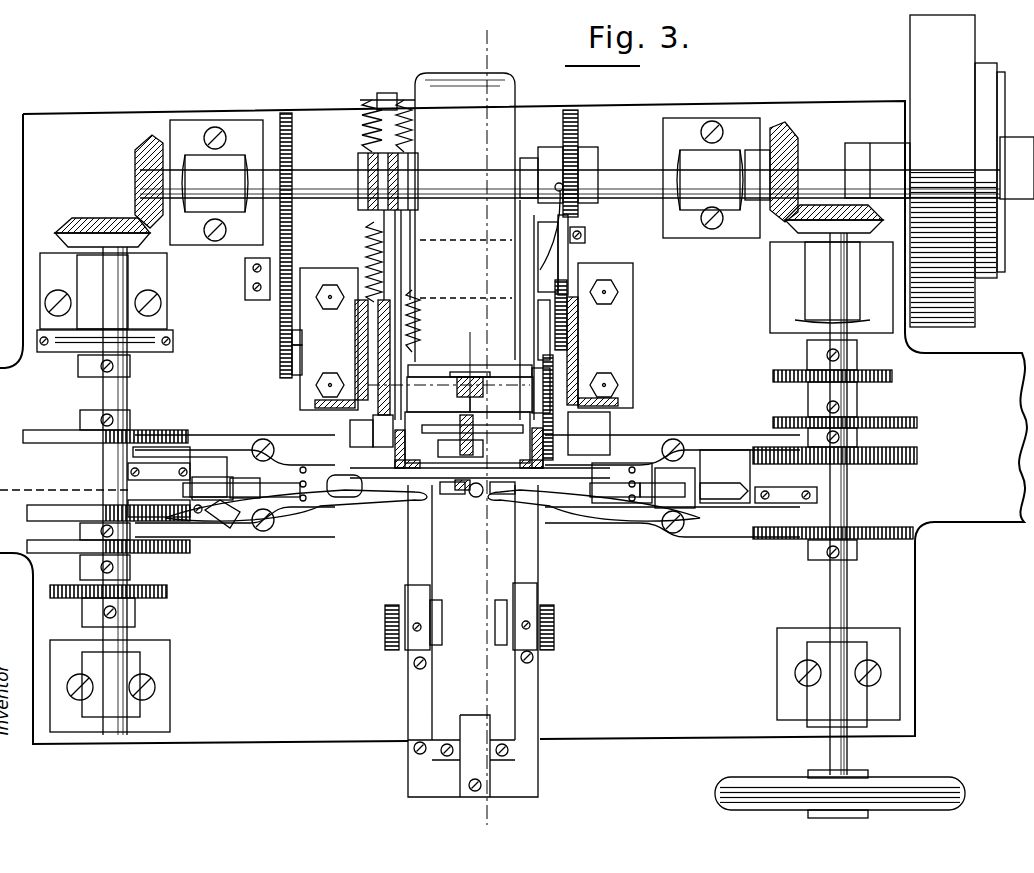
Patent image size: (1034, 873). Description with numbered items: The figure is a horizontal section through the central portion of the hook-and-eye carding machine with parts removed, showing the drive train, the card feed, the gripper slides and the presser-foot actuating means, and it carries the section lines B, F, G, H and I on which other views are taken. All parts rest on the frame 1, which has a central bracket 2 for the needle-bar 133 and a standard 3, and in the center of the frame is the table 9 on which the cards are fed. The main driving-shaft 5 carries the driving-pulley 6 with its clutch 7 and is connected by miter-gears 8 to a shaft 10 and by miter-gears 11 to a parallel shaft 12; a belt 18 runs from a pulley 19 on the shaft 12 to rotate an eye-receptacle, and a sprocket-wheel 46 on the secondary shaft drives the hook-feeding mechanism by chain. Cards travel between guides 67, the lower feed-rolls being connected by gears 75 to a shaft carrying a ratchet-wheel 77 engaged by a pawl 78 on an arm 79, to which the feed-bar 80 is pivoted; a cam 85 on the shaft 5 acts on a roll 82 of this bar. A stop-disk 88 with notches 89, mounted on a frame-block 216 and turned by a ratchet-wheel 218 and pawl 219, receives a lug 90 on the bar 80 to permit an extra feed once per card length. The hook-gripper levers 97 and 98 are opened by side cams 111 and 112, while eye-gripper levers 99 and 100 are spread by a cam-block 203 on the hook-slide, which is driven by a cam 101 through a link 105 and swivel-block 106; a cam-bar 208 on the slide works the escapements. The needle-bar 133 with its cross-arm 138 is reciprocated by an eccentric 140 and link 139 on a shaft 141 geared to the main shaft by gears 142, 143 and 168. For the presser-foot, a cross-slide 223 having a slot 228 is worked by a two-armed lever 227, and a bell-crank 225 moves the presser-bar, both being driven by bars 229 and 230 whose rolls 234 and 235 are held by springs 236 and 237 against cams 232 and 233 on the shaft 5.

The frame 1 is at (513, 422).
The central bracket 2 is at (560, 455).
The standard 3 is at (640, 326).
The main driving-shaft 5 is at (622, 166).
The driving-pulley 6 is at (910, 171).
The clutch 7 is at (985, 70).
The miter-gears 8 is at (835, 210).
The table 9 is at (540, 690).
The shaft 10 is at (815, 325).
The miter-gears 11 is at (135, 188).
The shaft 12 is at (125, 398).
The belt 18 is at (172, 336).
The pulley 19 is at (160, 345).
The sprocket-wheel 46 is at (168, 590).
The guides 67 is at (420, 525).
The gears 75 is at (545, 375).
The ratchet-wheel 77 is at (575, 398).
The pawl 78 is at (532, 375).
The arm or lever 79 is at (600, 335).
The bar 80 is at (560, 265).
The roll 82 is at (586, 232).
The cam 85 is at (580, 142).
The stop-disk 88 is at (580, 286).
The notches 89 is at (565, 256).
The lug 90 is at (545, 308).
The hook-gripper lever 97 is at (308, 530).
The hook-gripper lever 98 is at (250, 440).
The eye-gripper lever 99 is at (366, 505).
The eye-gripper lever 100 is at (320, 474).
The cam 101 is at (60, 512).
The link 105 is at (193, 465).
The swivel-block 106 is at (214, 522).
The side cam 111 is at (145, 545).
The side cam 112 is at (175, 430).
The needle-bar 133 is at (476, 494).
The cross-arm 138 is at (395, 540).
The link 139 is at (335, 298).
The eccentric 140 is at (322, 396).
The shaft 141 is at (290, 360).
The gear 142 is at (290, 340).
The gear 143 is at (278, 300).
The gear 168 is at (292, 215).
The cam-block 203 is at (265, 520).
The cam-bar 208 is at (690, 520).
The frame-block 216 is at (520, 285).
The ratchet-wheel 218 is at (530, 300).
The pawl 219 is at (515, 216).
The cross-slide 223 is at (478, 368).
The bell-crank 225 is at (458, 430).
The two-armed lever 227 is at (482, 392).
The slot 228 is at (466, 493).
The bar 229 is at (385, 278).
The bar 230 is at (398, 363).
The cam 232 is at (372, 222).
The cam 233 is at (400, 172).
The roll 234 is at (372, 264).
The roll 235 is at (412, 216).
The spring 236 is at (362, 120).
The spring 237 is at (412, 122).
The section line B is at (498, 418).
The section line F is at (4, 489).
The section line G is at (346, 484).
The section line H is at (468, 361).
The section line I is at (446, 386).